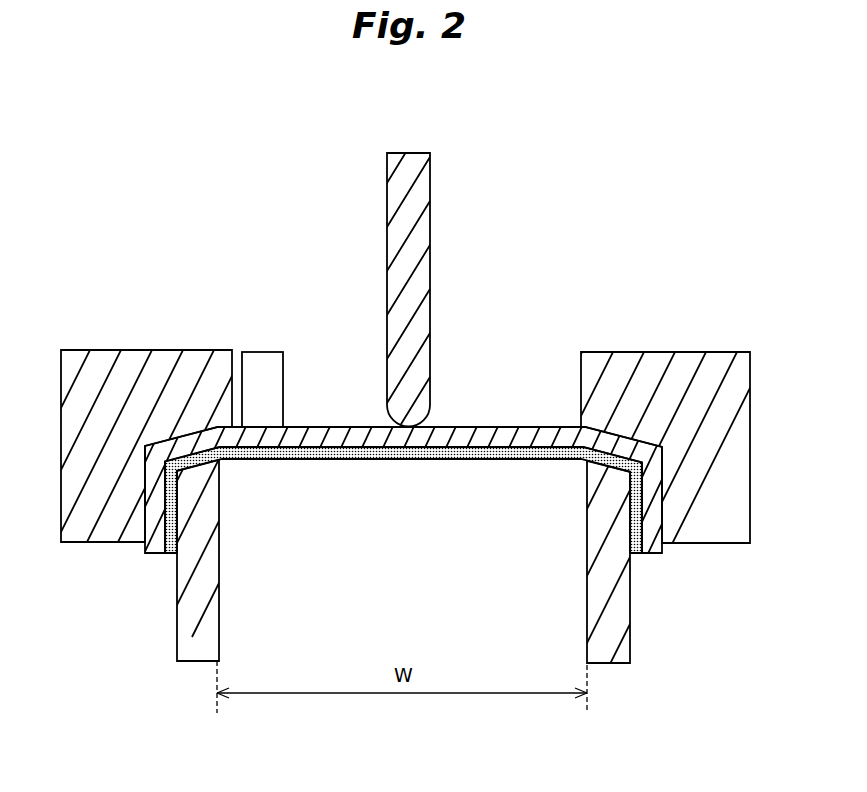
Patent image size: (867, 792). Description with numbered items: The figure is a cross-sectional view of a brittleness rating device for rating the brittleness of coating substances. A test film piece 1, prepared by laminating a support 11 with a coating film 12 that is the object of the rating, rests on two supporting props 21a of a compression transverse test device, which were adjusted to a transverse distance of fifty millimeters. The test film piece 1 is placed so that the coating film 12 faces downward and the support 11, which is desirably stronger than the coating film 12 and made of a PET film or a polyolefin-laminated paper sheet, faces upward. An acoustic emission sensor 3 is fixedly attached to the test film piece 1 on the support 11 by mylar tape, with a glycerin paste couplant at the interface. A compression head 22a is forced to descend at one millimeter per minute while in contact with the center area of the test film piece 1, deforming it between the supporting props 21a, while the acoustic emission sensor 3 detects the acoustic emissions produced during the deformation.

The test film piece 1 is at (394, 490).
The support 11 is at (311, 442).
The coating film 12 is at (420, 457).
The acoustic emission sensor 3 is at (283, 352).
The compression head 22a is at (430, 191).
The supporting props 21a is at (175, 620).